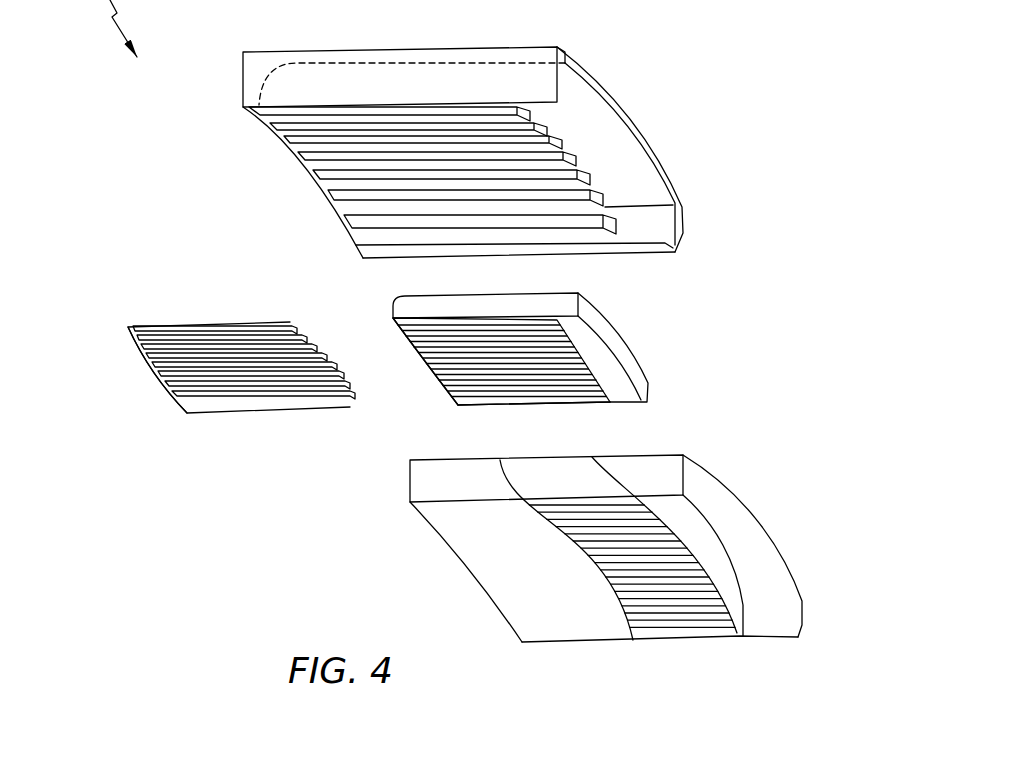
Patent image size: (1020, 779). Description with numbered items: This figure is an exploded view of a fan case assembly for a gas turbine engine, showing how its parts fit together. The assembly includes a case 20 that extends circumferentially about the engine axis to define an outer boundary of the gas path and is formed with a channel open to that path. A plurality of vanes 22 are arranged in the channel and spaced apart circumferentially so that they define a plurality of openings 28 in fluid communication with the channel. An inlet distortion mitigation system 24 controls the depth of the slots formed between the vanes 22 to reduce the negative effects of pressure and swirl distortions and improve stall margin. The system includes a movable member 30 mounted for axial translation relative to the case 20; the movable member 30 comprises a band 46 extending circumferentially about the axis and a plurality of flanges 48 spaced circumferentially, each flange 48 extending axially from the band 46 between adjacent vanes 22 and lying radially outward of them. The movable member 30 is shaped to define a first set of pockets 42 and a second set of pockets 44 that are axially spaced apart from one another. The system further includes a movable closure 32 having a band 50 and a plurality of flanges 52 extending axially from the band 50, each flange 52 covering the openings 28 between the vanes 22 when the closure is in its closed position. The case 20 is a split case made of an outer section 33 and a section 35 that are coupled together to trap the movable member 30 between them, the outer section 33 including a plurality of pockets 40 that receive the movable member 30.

The case 20 is at (868, 340).
The vanes 22 is at (610, 600).
The inlet distortion mitigation system 24 is at (644, 462).
The openings 28 is at (720, 583).
The movable member 30 is at (555, 360).
The movable closure 32 is at (203, 361).
The outer section 33 is at (656, 131).
The section 35 is at (757, 490).
The pockets 40 is at (590, 108).
The first set of pockets 42 is at (563, 403).
The second set of pockets 44 is at (492, 404).
The band 46 is at (614, 305).
The flanges 48 is at (425, 351).
The band 50 is at (163, 383).
The flanges 52 is at (334, 358).